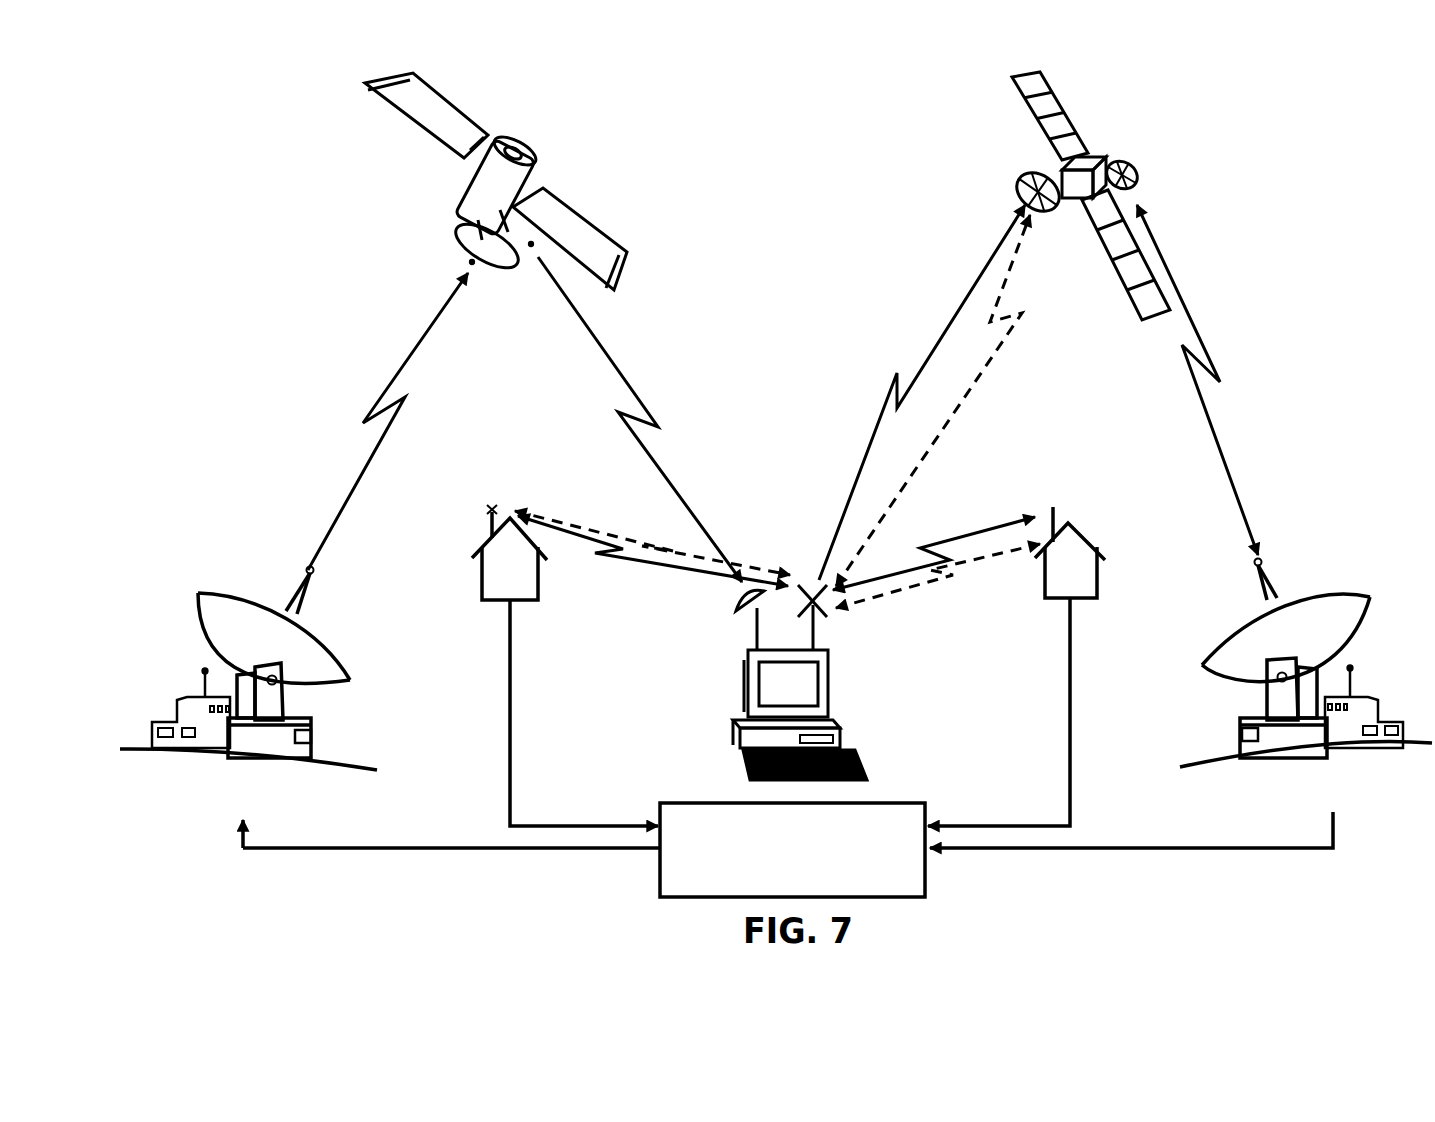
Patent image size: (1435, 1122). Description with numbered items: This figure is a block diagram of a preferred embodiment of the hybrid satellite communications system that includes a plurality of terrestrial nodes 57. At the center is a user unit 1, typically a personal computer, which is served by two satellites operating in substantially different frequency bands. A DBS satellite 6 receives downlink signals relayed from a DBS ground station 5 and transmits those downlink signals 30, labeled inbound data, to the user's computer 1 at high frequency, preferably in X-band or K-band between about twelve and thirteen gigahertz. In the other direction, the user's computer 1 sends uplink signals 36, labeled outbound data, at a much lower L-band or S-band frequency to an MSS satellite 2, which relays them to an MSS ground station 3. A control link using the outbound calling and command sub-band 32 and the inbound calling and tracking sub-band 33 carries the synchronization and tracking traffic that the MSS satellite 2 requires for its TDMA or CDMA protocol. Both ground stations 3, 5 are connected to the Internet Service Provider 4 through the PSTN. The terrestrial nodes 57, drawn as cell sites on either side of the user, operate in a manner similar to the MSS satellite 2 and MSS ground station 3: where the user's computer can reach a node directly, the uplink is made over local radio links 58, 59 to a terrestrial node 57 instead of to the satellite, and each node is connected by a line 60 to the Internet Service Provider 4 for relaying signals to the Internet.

The user unit 1 is at (835, 727).
The MSS satellite 2 is at (1037, 132).
The MSS ground station 3 is at (1245, 622).
The Internet Service Provider 4 is at (924, 803).
The DBS ground station 5 is at (317, 628).
The DBS satellite 6 is at (472, 195).
The downlink signals 30 is at (633, 438).
The outbound calling and command sub-band 32 is at (956, 400).
The inbound calling and tracking sub-band 33 is at (946, 465).
The uplink signals 36 is at (940, 330).
The terrestrial node 57 is at (538, 602).
The local wireless data link 58 is at (620, 560).
The local wireless return link 59 is at (598, 530).
The connection to Internet service provider 60 is at (515, 712).